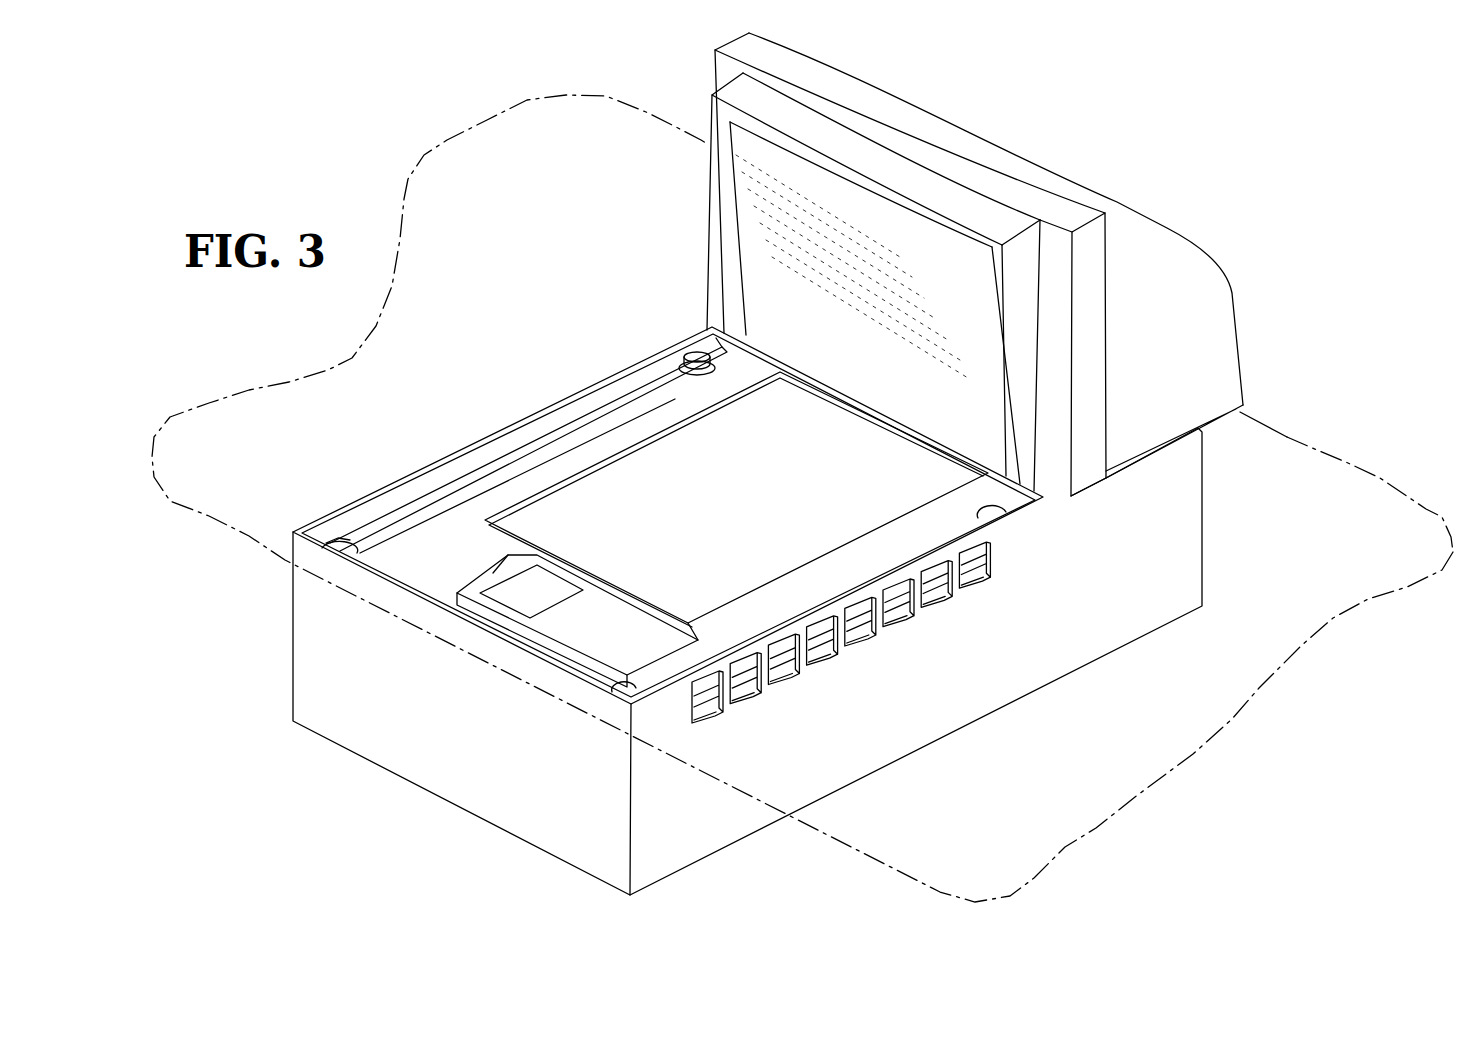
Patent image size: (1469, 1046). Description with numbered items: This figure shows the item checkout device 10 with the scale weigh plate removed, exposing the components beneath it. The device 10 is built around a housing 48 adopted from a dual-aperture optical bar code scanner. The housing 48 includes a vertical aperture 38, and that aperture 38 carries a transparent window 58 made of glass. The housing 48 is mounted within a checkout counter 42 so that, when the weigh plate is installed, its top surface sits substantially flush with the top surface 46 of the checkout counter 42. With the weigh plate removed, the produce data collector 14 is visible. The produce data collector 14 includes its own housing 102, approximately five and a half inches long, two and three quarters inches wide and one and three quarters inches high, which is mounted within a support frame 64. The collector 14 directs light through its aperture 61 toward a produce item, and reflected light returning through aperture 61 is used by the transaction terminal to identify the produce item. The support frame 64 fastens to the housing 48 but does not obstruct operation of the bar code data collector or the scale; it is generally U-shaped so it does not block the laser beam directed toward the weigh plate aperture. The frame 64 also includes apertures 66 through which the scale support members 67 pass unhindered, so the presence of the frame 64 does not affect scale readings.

The item checkout device 10 is at (1062, 147).
The produce data collector 14 is at (641, 609).
The vertical aperture 38 is at (997, 318).
The checkout counter 42 is at (1335, 455).
The top surface 46 is at (1220, 671).
The housing 48 is at (979, 686).
The transparent window 58 is at (955, 388).
The aperture 61 is at (553, 590).
The support frame 64 is at (443, 535).
The apertures 66 is at (678, 371).
The scale support members 67 is at (694, 352).
The housing 102 is at (488, 618).